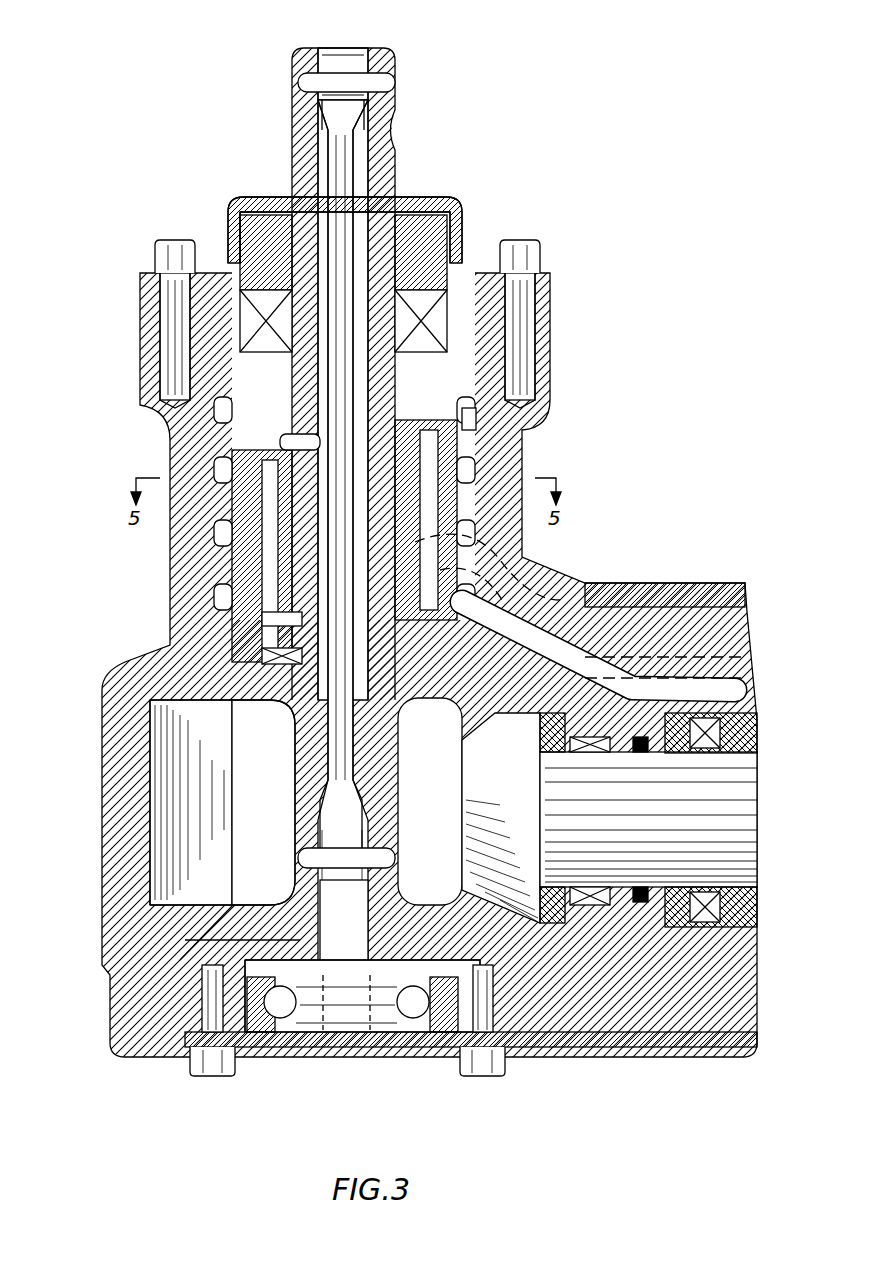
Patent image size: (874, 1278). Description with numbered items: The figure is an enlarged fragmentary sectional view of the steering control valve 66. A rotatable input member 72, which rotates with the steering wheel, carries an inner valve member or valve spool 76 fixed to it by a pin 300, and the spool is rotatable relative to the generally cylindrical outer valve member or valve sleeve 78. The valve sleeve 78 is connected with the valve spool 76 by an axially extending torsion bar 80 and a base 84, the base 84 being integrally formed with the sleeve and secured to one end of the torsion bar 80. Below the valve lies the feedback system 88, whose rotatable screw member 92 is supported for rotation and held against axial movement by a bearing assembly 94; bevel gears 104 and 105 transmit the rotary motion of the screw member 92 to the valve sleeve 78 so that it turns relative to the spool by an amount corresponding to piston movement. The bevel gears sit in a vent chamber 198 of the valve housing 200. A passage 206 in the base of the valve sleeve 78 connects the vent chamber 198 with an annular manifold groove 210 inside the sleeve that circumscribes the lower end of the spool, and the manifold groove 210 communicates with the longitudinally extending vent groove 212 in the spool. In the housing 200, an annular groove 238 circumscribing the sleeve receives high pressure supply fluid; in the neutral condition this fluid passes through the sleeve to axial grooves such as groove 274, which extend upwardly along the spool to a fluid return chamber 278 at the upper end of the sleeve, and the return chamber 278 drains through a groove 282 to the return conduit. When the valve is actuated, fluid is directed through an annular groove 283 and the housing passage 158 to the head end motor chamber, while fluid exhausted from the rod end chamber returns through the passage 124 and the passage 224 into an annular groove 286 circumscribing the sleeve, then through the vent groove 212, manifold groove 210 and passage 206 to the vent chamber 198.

The steering control valve 66 is at (565, 230).
The rotatable input member 72 is at (395, 165).
The pin 300 is at (290, 433).
The valve sleeve 78 is at (220, 447).
The annular groove 238 is at (220, 470).
The annular groove 286 is at (220, 533).
The annular groove 283 is at (220, 597).
The vent groove 212 is at (270, 622).
The annular manifold groove 210 is at (265, 655).
The passage 206 is at (243, 697).
The torsion bar 80 is at (347, 702).
The vent chamber 198 is at (178, 865).
The valve housing 200 is at (130, 1012).
The feedback system 88 is at (397, 1030).
The bevel gear 104 is at (522, 905).
The bevel gear 105 is at (590, 900).
The bearing assembly 94 is at (593, 902).
The screw member 92 is at (650, 853).
The base 84 is at (395, 772).
The passage 124 is at (745, 627).
The passage 158 is at (638, 693).
The passage 224 is at (542, 597).
The axial groove 274 is at (537, 528).
The valve spool 76 is at (425, 503).
The groove 282 is at (470, 418).
The fluid return chamber 278 is at (447, 357).